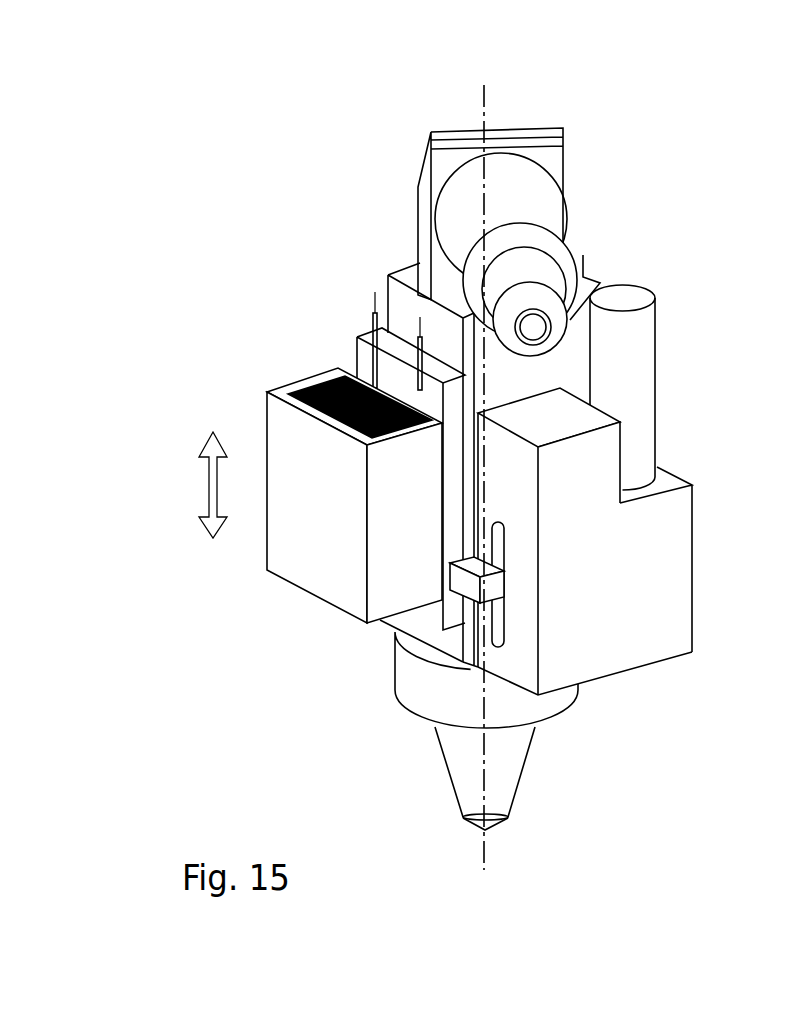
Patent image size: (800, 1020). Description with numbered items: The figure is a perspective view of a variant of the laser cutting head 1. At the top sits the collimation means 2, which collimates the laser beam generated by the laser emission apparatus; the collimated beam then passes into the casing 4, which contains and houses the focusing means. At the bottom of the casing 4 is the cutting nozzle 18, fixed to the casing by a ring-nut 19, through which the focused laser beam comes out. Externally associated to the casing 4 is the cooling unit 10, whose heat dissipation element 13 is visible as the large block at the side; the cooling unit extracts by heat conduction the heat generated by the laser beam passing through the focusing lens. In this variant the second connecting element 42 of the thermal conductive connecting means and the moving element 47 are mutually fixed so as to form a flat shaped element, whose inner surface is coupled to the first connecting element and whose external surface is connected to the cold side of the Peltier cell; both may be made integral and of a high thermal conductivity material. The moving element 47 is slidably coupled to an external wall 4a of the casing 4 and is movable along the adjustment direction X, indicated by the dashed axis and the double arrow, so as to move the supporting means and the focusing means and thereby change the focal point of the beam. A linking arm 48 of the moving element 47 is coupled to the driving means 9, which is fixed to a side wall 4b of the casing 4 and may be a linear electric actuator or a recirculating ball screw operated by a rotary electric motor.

The laser cutting head 1 is at (253, 121).
The collimation means 2 is at (553, 212).
The casing 4 is at (403, 280).
The external wall 4a is at (405, 316).
The side wall 4b is at (545, 368).
The second connecting element 42 is at (397, 368).
The heat dissipation element 13 is at (287, 548).
The cooling unit 10 is at (247, 648).
The driving means 9 is at (653, 642).
The moving element 47 is at (457, 545).
The linking arm 48 is at (493, 587).
The ring-nut 19 is at (533, 710).
The cutting nozzle 18 is at (505, 793).
The adjustment direction X is at (485, 743).